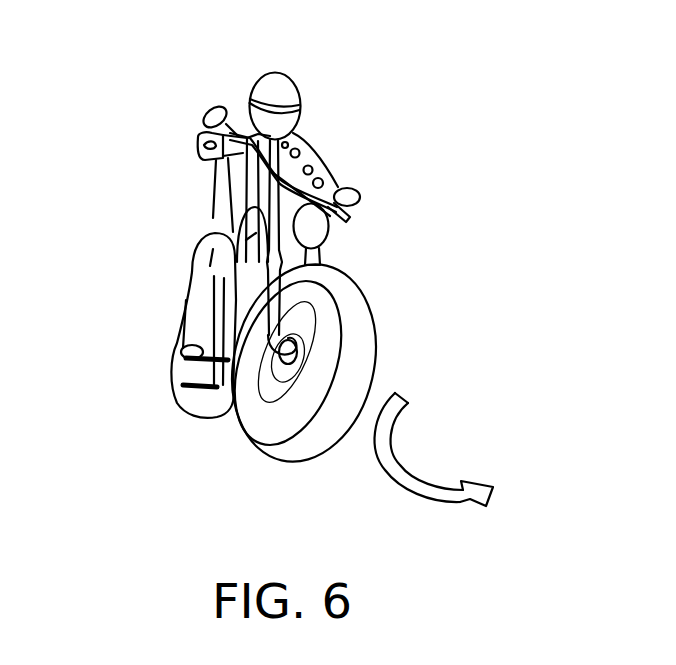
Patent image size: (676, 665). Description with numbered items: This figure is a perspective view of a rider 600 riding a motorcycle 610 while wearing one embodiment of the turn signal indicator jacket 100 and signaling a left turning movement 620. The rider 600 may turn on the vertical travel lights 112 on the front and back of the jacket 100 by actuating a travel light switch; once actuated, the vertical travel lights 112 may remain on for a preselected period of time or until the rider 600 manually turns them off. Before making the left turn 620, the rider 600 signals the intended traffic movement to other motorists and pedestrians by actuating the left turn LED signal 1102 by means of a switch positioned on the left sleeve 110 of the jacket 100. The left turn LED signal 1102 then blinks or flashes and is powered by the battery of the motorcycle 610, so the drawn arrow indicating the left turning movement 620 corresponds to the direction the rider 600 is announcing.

The turn signal indicator jacket 100 is at (188, 114).
The left sleeve 110 is at (307, 160).
The left turn LED signal 1102 is at (313, 170).
The vertical travel lights 112 is at (247, 199).
The rider 600 is at (222, 218).
The motorcycle 610 is at (358, 347).
The left turning movement 620 is at (476, 484).